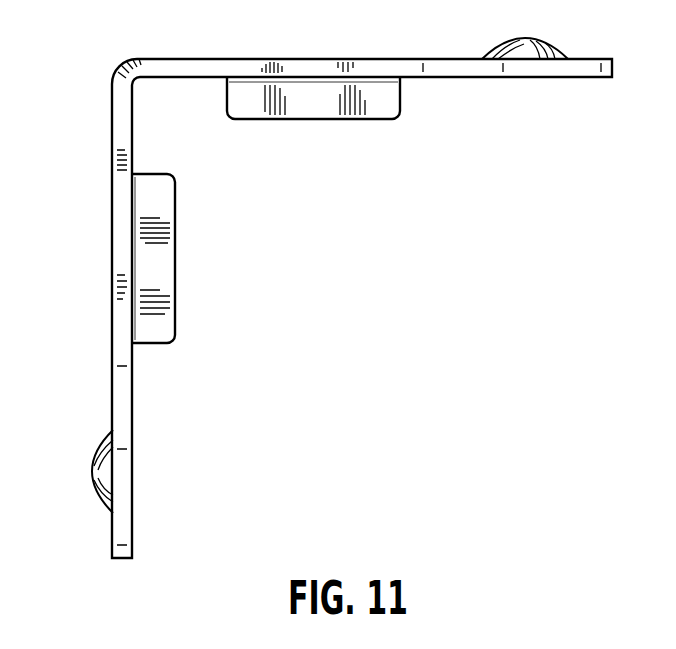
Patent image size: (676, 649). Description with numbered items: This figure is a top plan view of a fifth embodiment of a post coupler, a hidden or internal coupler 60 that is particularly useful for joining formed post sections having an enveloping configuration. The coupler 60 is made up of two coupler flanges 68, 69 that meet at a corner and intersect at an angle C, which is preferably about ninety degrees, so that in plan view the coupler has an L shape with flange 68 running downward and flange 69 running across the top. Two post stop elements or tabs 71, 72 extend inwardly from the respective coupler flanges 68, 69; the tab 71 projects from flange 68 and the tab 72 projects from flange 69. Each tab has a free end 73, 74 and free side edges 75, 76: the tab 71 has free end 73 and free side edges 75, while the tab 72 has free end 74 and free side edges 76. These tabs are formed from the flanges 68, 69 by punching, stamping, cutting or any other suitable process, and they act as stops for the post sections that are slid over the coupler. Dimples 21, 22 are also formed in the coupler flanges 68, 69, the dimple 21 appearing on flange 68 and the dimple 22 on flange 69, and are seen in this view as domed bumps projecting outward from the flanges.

The hidden coupler 60 is at (448, 372).
The coupler flange 69 is at (441, 68).
The coupler flange 68 is at (124, 377).
The angle C is at (121, 62).
The dimple 22 is at (526, 43).
The dimple 21 is at (95, 470).
The post stop element or tab 72 is at (319, 110).
The free end 74 is at (270, 120).
The free side edge 76 is at (228, 96).
The post stop element or tab 71 is at (164, 286).
The free end 73 is at (176, 236).
The free side edge 75 is at (148, 173).